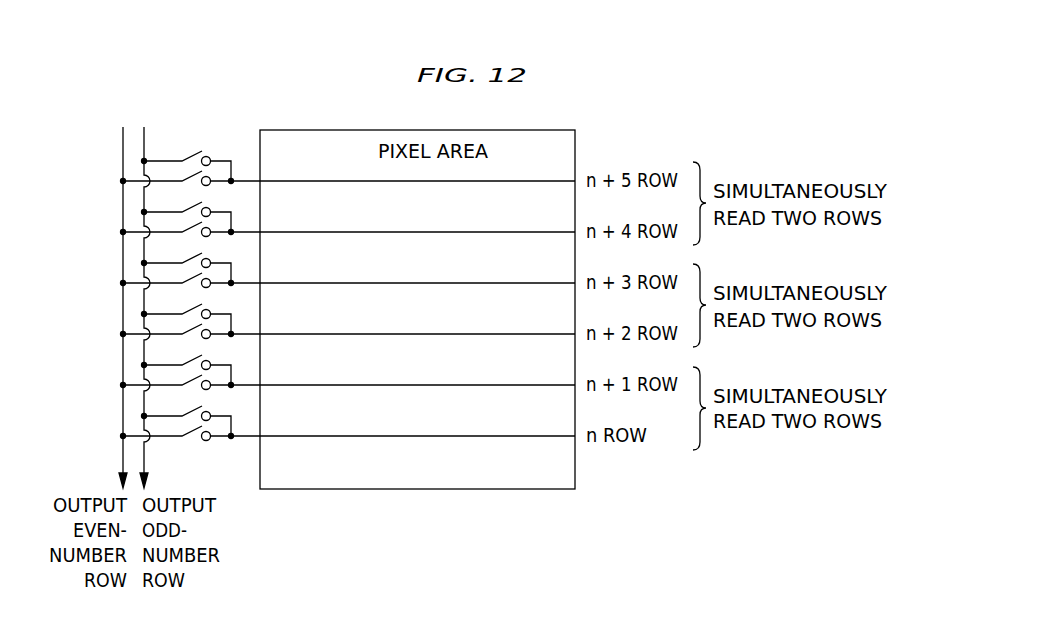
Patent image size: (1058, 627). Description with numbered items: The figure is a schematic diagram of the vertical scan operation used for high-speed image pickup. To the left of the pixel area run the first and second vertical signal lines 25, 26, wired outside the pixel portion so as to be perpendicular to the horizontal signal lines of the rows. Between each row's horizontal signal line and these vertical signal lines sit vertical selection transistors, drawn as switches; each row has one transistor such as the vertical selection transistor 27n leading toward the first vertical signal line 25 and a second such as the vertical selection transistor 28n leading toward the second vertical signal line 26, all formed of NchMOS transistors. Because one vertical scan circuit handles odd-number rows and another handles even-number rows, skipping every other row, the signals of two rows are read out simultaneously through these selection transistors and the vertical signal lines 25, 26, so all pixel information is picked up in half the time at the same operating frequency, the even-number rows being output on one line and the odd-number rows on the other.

The first vertical signal line 25 is at (144, 140).
The second vertical signal line 26 is at (123, 139).
The vertical selection transistor 27n is at (197, 421).
The vertical selection transistor 28n is at (197, 442).